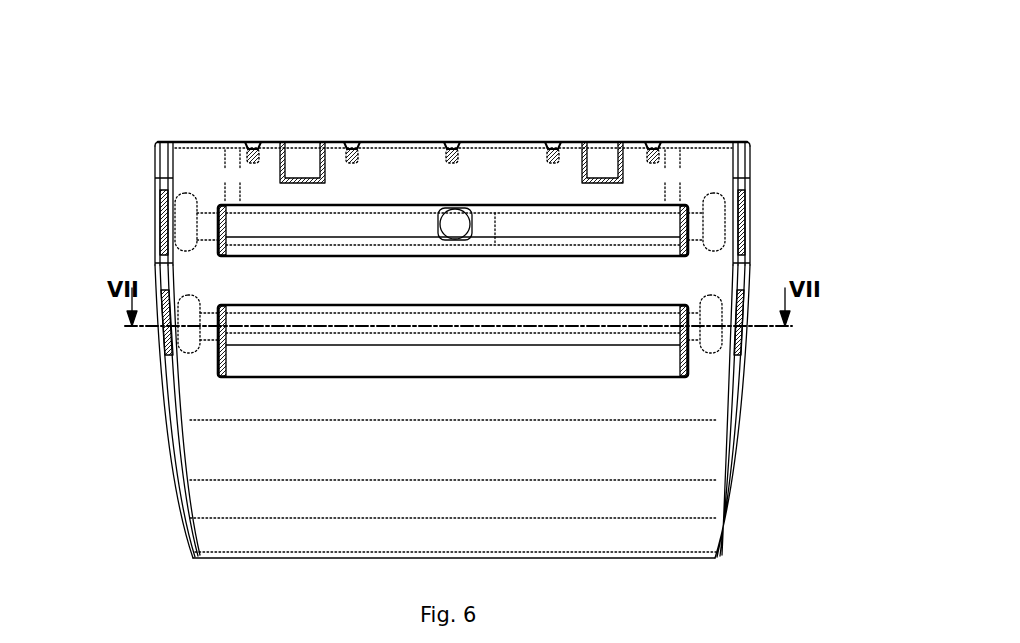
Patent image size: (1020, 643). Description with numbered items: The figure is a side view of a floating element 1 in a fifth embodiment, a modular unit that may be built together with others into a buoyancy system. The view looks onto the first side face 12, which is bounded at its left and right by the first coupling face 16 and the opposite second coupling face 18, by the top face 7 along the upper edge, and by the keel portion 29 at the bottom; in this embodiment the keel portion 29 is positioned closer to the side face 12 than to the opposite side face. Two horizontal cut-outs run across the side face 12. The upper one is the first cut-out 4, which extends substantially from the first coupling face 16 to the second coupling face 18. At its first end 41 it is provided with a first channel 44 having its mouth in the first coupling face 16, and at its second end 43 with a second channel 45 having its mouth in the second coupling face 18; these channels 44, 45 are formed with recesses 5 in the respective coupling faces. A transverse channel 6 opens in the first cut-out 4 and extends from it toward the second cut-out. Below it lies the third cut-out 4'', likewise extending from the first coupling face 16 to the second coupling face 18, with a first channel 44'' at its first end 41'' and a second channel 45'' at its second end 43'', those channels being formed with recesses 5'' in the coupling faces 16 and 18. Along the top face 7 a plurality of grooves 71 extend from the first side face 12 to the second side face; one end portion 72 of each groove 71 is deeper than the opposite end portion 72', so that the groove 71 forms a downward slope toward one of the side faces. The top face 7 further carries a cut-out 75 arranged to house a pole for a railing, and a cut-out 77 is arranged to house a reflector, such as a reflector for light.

The floating element 1 is at (200, 108).
The first coupling face 16 is at (160, 286).
The second coupling face 18 is at (752, 286).
The recesses 5 is at (469, 158).
The first channel 44 is at (198, 156).
The second channel 45 is at (730, 156).
The first end 41 is at (453, 158).
The second end 43 is at (703, 158).
The first cut-out 4 is at (453, 153).
The transverse channel 6 is at (468, 207).
The end portion 72 is at (453, 105).
The grooves 71 is at (453, 141).
The opposite end portion 72' is at (453, 112).
The top face 7 is at (567, 142).
The cut-out 77 is at (614, 142).
The cut-out 75 is at (659, 211).
The first side face 12 is at (718, 452).
The second end 43'' is at (770, 411).
The keel portion 29 is at (716, 559).
The recesses 5'' is at (444, 329).
The first channel 44'' is at (140, 349).
The second channel 45'' is at (754, 351).
The first end 41'' is at (379, 401).
The third cut-out 4'' is at (381, 428).